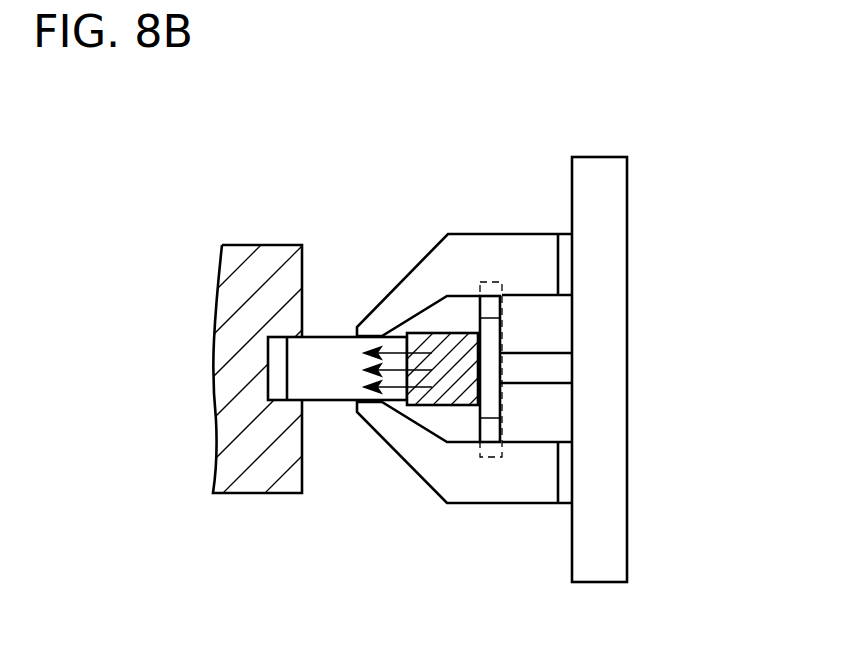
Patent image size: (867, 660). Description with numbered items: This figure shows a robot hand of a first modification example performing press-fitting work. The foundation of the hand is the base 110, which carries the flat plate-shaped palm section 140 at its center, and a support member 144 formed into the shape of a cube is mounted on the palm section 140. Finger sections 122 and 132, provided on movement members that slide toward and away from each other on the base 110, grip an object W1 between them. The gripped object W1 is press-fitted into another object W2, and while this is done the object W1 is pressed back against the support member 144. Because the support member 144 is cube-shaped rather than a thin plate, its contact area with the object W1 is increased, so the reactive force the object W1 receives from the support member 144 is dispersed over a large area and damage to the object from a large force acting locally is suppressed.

The base 110 is at (600, 157).
The finger section 122 is at (400, 462).
The finger section 132 is at (402, 278).
The palm section 140 is at (490, 282).
The support member 144 is at (443, 406).
The gripped object W1 is at (327, 337).
The another object W2 is at (244, 245).